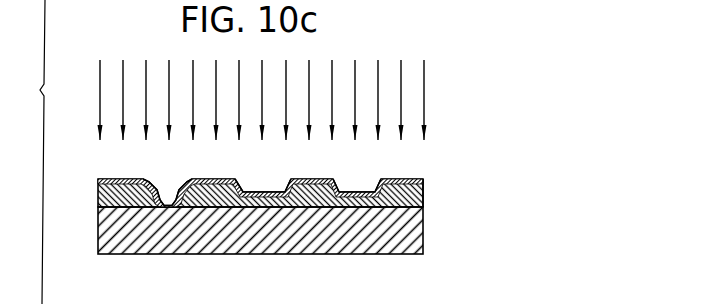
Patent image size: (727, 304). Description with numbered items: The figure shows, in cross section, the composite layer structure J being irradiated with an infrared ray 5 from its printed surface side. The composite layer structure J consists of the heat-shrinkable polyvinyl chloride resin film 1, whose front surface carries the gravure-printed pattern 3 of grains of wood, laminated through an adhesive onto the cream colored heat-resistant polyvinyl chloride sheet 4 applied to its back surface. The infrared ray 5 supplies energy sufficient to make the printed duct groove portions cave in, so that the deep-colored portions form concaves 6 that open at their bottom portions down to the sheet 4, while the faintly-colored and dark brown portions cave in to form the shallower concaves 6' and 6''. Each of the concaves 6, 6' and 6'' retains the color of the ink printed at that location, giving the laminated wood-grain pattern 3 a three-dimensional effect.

The heat-shrinkable polyvinyl chloride resin film 1 is at (425, 190).
The pattern of grains of wood 3 is at (383, 195).
The heat-resistant polyvinyl chloride sheet 4 is at (332, 240).
The infrared ray 5 is at (355, 103).
The concaves 6 is at (167, 178).
The concaves 6' is at (263, 171).
The concaves 6'' is at (357, 171).
The composite layer structure J is at (449, 185).